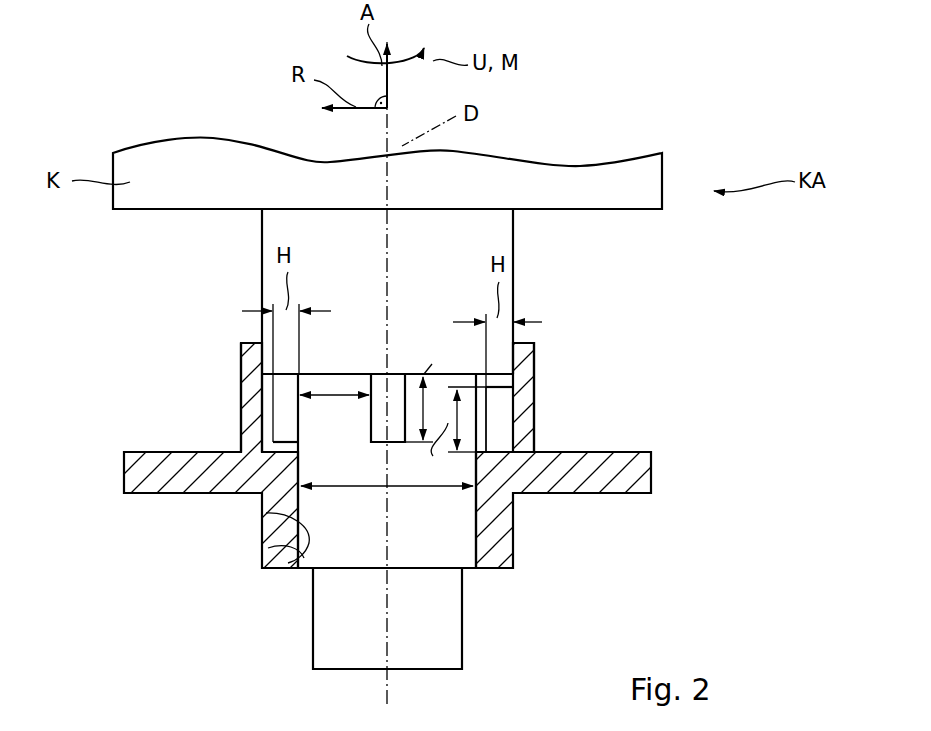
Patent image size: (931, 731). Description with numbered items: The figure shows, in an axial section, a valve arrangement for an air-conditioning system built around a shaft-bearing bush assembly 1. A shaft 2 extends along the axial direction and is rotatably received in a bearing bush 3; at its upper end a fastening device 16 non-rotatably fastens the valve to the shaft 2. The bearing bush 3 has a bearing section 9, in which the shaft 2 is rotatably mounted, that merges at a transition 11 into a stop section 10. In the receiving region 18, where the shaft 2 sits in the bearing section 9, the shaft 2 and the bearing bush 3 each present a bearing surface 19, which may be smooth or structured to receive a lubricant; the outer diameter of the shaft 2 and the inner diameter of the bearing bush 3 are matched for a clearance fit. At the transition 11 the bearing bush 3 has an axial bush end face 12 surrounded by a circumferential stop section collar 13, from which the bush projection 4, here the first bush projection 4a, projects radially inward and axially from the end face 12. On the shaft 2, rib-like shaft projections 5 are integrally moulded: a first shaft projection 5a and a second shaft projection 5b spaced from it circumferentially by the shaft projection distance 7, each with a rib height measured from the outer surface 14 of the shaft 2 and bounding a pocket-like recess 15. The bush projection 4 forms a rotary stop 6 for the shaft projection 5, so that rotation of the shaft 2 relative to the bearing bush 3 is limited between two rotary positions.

The shaft-bearing bush assembly 1 is at (670, 360).
The shaft 2 is at (516, 265).
The bearing bush 3 is at (658, 470).
The bush projection 4 is at (569, 413).
The first bush projection 4a is at (500, 400).
The shaft projection 5 is at (425, 360).
The first shaft projection 5a is at (425, 360).
The second shaft projection 5b is at (280, 398).
The rotary stop 6 is at (403, 372).
The shaft projection distance 7 is at (335, 378).
The bearing section 9 is at (500, 551).
The stop section 10 is at (582, 393).
The transition 11 is at (492, 462).
The axial bush end face 12 is at (272, 449).
The stop section collar 13 is at (523, 360).
The outer surface 14 is at (481, 419).
The pocket-like recess 15 is at (268, 411).
The fastening device 16 is at (254, 219).
The receiving region 18 is at (359, 535).
The bearing surface 19 is at (297, 510).